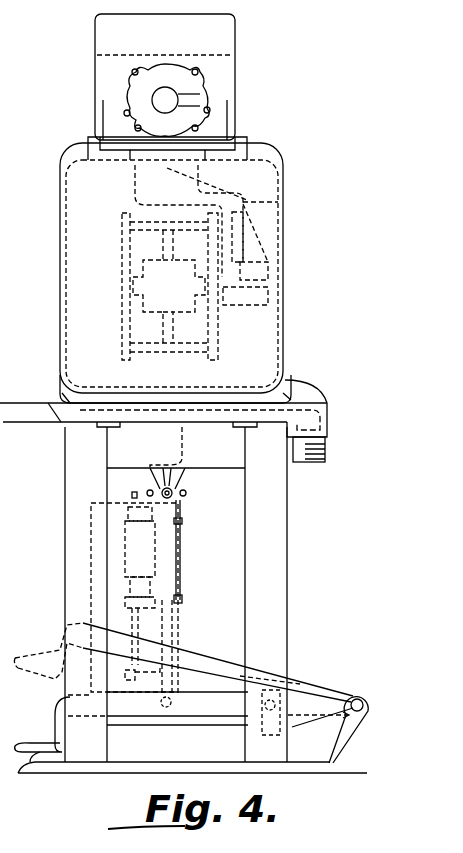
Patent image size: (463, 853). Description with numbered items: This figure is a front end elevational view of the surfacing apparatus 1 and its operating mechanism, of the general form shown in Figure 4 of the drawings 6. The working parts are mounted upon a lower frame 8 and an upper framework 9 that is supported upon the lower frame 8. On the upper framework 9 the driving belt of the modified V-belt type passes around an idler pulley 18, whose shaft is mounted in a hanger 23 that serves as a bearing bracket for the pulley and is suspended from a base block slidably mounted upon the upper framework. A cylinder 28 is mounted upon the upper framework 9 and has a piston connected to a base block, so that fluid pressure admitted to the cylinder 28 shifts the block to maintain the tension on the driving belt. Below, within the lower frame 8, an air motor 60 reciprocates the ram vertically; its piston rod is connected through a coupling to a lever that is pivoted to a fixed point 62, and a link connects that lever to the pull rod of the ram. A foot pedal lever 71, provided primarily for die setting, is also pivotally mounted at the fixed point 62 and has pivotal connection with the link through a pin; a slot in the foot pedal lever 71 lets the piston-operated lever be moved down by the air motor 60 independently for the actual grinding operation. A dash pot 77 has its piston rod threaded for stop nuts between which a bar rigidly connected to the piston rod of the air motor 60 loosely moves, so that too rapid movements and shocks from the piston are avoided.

The cylinder 28 is at (192, 85).
The mounting plate 6 is at (123, 175).
The hanger 23 is at (285, 193).
The idler pulley 18 is at (118, 240).
The upper framework 9 is at (77, 400).
The lower frame 8 is at (68, 561).
The dash pot 77 is at (155, 540).
The air motor 60 is at (168, 556).
The foot pedal lever 71 is at (320, 694).
The fixed point 62 is at (359, 699).
The base 1 is at (183, 771).